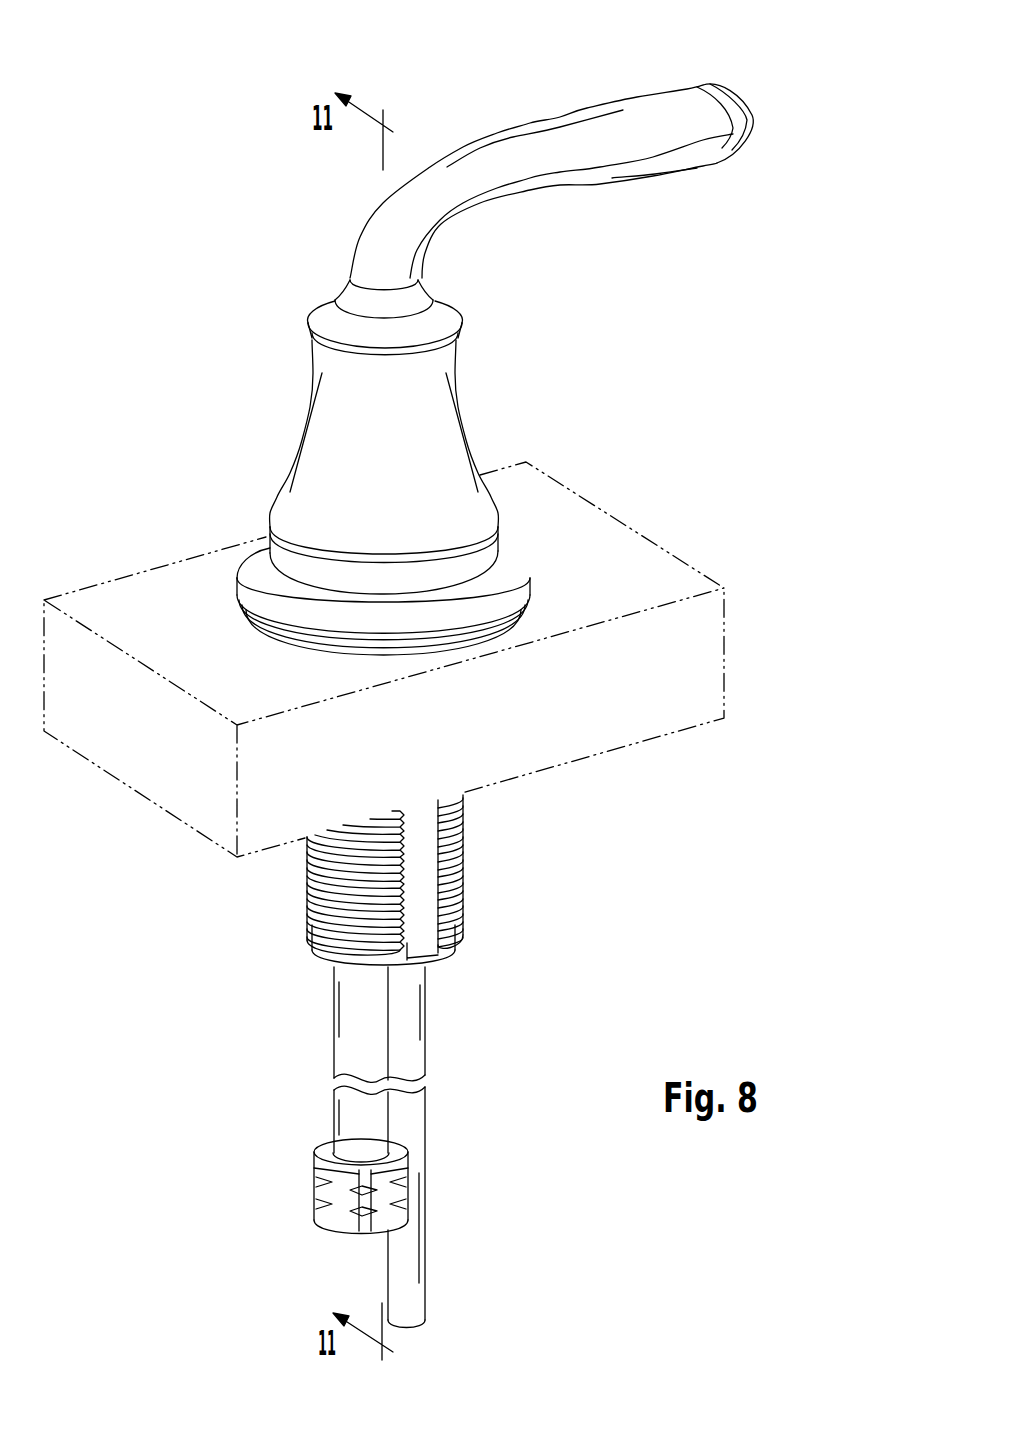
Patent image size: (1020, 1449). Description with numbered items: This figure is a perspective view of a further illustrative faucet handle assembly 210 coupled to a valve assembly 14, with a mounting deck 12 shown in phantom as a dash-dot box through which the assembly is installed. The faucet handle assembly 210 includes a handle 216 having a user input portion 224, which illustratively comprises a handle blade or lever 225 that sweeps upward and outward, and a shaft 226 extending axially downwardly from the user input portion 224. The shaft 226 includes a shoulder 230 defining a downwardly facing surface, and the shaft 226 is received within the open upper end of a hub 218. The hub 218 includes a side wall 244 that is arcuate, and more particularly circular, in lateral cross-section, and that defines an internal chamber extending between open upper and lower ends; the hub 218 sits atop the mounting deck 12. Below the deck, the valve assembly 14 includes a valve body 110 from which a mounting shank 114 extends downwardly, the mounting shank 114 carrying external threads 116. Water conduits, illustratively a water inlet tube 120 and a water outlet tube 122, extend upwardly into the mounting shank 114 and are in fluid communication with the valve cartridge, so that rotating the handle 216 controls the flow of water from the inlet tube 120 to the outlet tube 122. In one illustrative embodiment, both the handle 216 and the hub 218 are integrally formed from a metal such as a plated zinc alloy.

The faucet handle assembly 210 is at (233, 180).
The handle 216 is at (528, 118).
The user input portion 224 is at (703, 107).
The handle blade or lever 225 is at (757, 120).
The shaft 226 is at (415, 287).
The shoulder 230 is at (322, 308).
The hub 218 is at (475, 425).
The side wall 244 is at (300, 441).
The mounting deck 12 is at (672, 575).
The valve assembly 14 is at (288, 890).
The valve body 110 is at (455, 910).
The external threads 116 is at (462, 845).
The mounting shank 114 is at (322, 940).
The water inlet tube 120 is at (337, 1100).
The water outlet tube 122 is at (407, 1270).